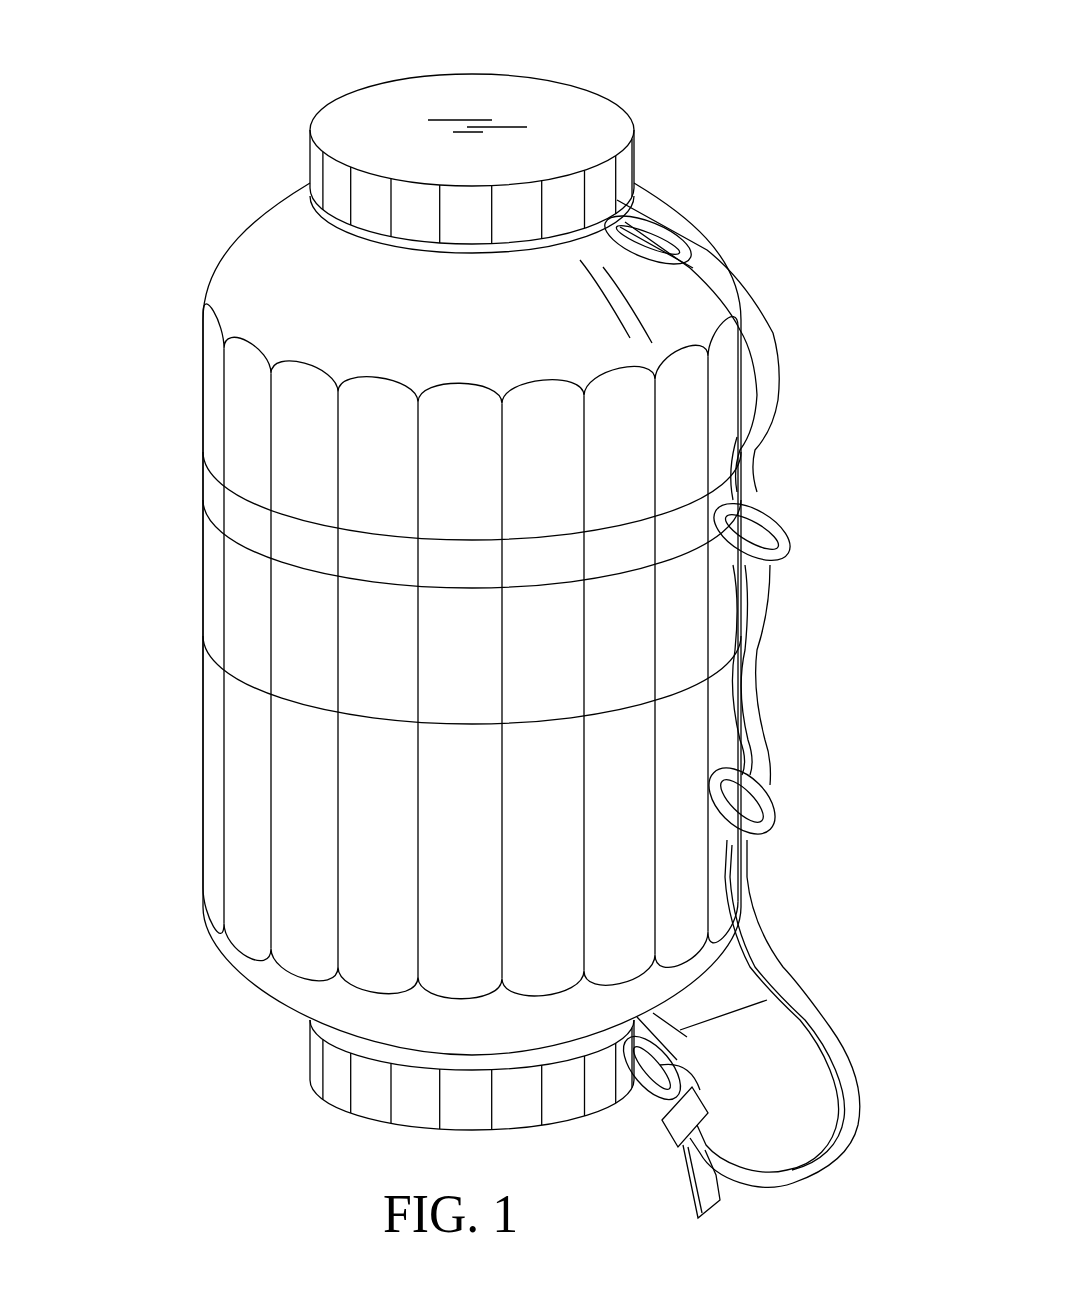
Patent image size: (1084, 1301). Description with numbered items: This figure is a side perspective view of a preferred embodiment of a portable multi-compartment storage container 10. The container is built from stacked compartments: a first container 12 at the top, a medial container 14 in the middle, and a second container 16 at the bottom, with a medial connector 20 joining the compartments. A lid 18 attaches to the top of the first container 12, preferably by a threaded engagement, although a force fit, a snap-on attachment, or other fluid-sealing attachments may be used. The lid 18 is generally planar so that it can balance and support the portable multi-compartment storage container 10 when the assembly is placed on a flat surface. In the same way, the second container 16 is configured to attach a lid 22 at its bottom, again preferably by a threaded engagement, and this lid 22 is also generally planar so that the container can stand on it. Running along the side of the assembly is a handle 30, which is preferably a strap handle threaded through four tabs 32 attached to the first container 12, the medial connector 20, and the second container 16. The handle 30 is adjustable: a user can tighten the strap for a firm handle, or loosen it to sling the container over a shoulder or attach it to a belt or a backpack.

The portable multi-compartment storage container 10 is at (742, 185).
The first container 12 is at (238, 290).
The medial container 14 is at (215, 588).
The second container 16 is at (215, 742).
The lid 18 is at (562, 110).
The medial connector 20 is at (215, 496).
The lid 22 is at (337, 1087).
The handle 30 is at (765, 340).
The tabs 32 is at (685, 213).